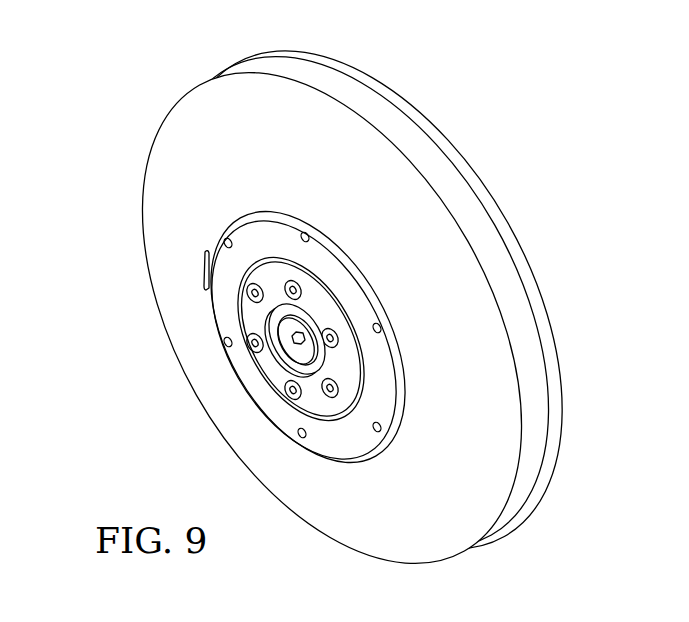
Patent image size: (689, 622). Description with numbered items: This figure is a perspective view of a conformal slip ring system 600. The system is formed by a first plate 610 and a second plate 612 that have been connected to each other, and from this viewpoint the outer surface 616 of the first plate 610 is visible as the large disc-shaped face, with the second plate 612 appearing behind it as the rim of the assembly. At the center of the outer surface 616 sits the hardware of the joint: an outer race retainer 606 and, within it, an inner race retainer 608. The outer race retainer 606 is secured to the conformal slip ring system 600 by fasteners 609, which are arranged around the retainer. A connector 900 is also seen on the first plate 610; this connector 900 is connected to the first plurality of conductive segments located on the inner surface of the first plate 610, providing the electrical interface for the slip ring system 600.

The conformal slip ring system 600 is at (349, 311).
The outer race retainer 606 is at (265, 283).
The inner race retainer 608 is at (298, 352).
The fasteners 609 is at (330, 399).
The first plate 610 is at (217, 77).
The second plate 612 is at (393, 87).
The outer surface 616 is at (167, 193).
The connector 900 is at (205, 256).